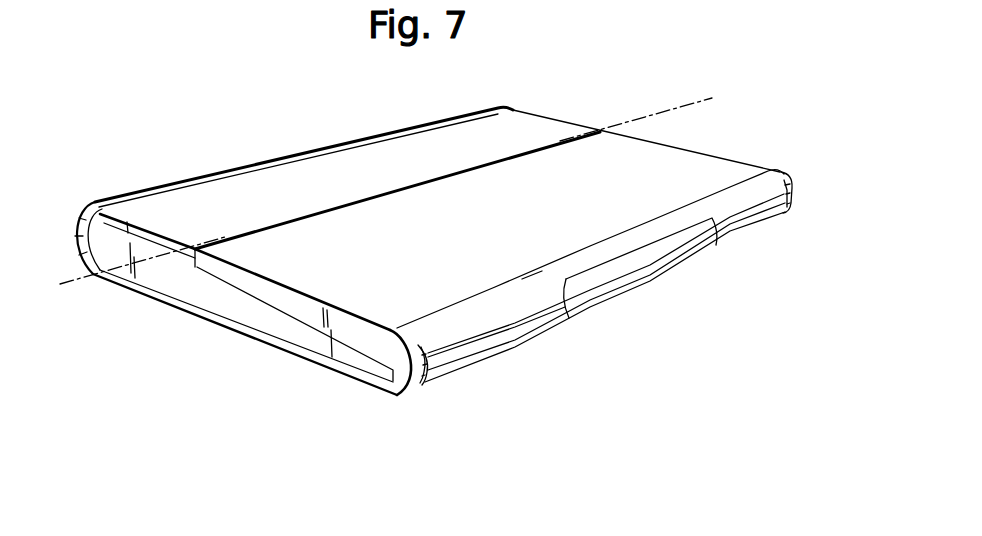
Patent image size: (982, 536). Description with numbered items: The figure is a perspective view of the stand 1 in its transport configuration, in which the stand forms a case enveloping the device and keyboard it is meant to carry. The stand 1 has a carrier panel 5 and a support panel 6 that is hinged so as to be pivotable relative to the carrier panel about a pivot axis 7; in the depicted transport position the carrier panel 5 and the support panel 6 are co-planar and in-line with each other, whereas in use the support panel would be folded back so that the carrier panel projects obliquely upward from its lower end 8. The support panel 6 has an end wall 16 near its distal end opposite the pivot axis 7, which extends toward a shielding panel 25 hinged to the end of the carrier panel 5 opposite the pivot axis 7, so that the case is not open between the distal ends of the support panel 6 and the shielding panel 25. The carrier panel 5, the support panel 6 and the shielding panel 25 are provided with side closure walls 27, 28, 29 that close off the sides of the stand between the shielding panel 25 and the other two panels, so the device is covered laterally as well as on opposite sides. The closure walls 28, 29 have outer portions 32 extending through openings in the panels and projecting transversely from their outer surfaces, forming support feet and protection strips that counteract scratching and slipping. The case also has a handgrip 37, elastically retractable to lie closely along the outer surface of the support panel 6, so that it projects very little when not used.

The stand 1 is at (663, 87).
The carrier panel 5 is at (514, 125).
The support panel 6 is at (565, 152).
The pivot axis 7 is at (84, 283).
The lower end 8 is at (239, 172).
The end wall 16 is at (521, 329).
The shielding panel 25 is at (200, 327).
The side closure wall 27 is at (145, 236).
The side closure wall 28 is at (356, 330).
The side closure wall 29 is at (255, 318).
The outer portion 32 is at (790, 178).
The handgrip 37 is at (645, 272).